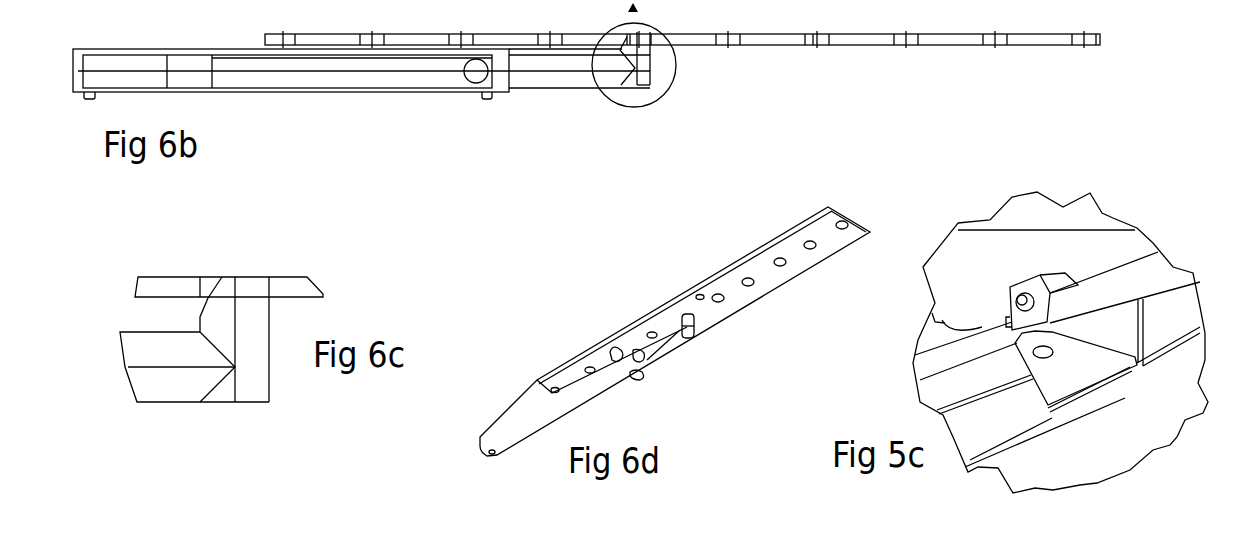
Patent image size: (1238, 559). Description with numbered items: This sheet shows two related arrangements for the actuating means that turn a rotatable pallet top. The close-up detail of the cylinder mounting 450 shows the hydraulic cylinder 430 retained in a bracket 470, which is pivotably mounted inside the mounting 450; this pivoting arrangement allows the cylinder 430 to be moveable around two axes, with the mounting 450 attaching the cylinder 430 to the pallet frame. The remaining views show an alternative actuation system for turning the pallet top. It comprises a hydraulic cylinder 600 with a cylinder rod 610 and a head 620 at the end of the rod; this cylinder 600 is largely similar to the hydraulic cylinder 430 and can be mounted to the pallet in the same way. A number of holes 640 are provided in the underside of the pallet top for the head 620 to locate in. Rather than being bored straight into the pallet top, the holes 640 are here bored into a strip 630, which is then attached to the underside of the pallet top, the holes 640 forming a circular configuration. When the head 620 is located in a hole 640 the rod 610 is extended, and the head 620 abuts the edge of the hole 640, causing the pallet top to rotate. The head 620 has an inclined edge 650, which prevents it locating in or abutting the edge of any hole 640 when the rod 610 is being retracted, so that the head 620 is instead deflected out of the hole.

In FIG. 6B, the hydraulic cylinder 600 is at (337, 69).
In FIG. 6D, the hydraulic cylinder 600 is at (535, 415).
In FIG. 6B, the cylinder rod 610 is at (535, 70).
In FIG. 6D, the cylinder rod 610 is at (667, 342).
In FIG. 6B, the head 620 is at (650, 68).
In FIG. 6C, the head 620 is at (240, 358).
In FIG. 6D, the head 620 is at (693, 335).
In FIG. 6B, the strip 630 is at (855, 42).
In FIG. 6D, the strip 630 is at (767, 278).
In FIG. 6B, the holes 640 is at (813, 38).
In FIG. 6C, the holes 640 is at (208, 285).
In FIG. 6D, the holes 640 is at (698, 292).
In FIG. 6C, the inclined edge 650 is at (208, 300).
In FIG. 5C, the hydraulic cylinder 430 is at (1147, 278).
In FIG. 5C, the cylinder mounting 450 is at (1082, 360).
In FIG. 5C, the bracket 470 is at (1045, 323).